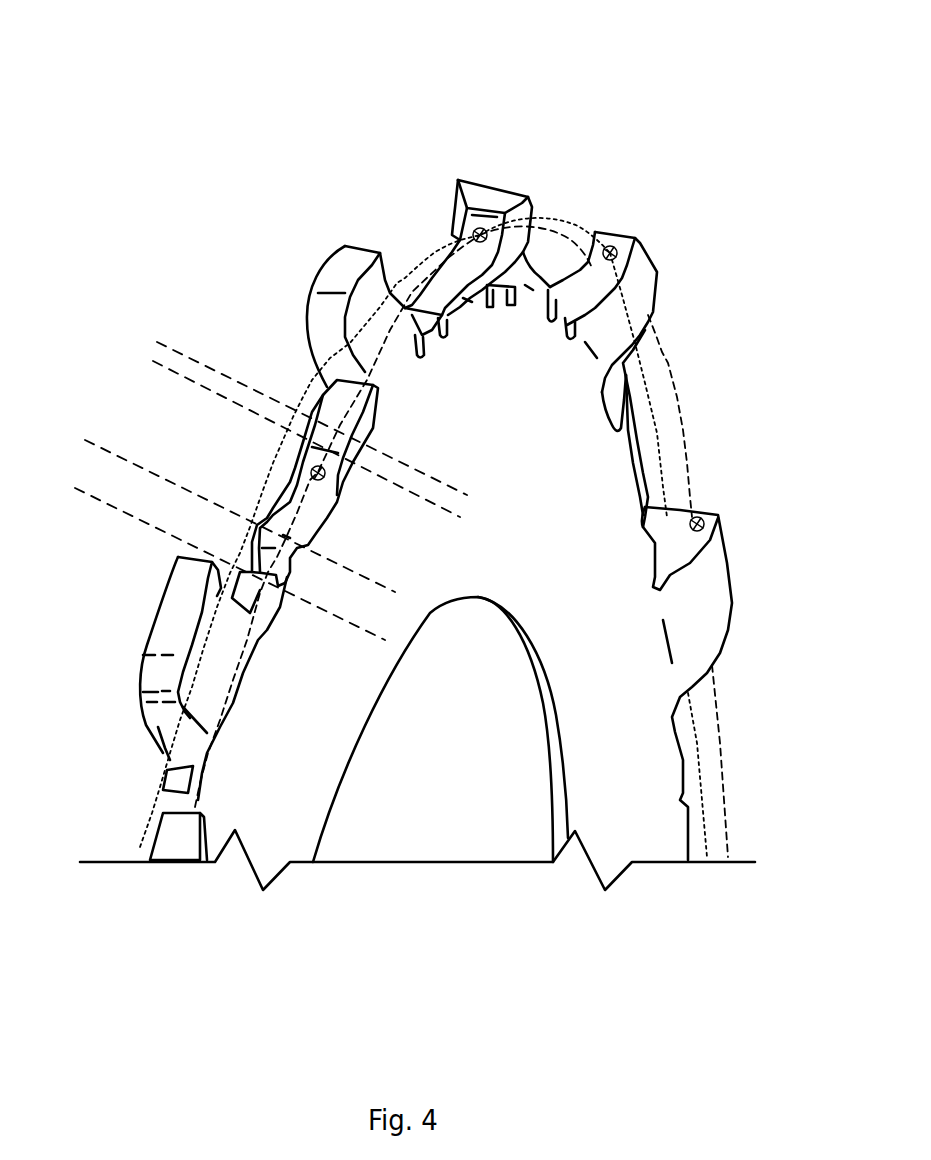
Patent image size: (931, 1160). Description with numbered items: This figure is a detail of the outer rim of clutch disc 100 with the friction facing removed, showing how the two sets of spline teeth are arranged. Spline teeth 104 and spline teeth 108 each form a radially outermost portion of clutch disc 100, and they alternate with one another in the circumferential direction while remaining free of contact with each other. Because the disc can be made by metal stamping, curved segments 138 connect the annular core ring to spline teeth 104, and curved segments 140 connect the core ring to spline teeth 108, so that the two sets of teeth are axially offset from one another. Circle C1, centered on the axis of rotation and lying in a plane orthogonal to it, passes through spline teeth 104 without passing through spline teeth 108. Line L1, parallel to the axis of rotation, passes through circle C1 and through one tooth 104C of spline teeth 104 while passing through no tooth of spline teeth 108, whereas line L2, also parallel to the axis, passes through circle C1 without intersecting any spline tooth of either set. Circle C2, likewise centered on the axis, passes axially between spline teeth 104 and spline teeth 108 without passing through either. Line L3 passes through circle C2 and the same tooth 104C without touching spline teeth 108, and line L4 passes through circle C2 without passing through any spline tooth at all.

The clutch disc 100 is at (728, 101).
The spline teeth 104 is at (643, 243).
The tooth 104C is at (307, 408).
The spline teeth 108 is at (138, 646).
The curved segments 138 is at (598, 288).
The curved segments 140 is at (160, 732).
The circle C1 is at (385, 357).
The circle C2 is at (437, 248).
The line L1 is at (442, 508).
The line L2 is at (337, 622).
The line L3 is at (452, 488).
The line L4 is at (377, 583).